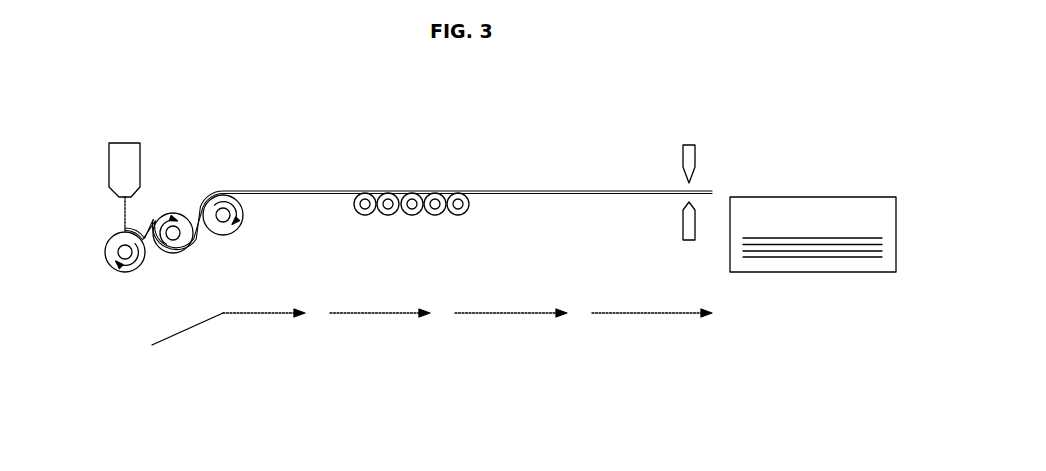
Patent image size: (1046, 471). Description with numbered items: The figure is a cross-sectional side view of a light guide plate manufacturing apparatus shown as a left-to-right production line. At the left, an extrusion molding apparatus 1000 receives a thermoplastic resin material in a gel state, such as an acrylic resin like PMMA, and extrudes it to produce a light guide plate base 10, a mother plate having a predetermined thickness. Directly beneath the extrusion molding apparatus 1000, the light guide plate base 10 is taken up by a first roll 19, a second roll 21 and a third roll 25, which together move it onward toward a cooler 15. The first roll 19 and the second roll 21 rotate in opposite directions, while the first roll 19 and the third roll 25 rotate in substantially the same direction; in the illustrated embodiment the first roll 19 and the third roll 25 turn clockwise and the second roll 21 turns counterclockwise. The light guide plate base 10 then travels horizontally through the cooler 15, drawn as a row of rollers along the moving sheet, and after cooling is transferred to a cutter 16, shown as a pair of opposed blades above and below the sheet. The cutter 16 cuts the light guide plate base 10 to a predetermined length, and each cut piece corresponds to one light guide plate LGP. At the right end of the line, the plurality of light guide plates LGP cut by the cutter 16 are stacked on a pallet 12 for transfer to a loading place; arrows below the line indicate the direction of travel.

The extrusion molding apparatus 1000 is at (125, 143).
The light guide plate base 10 is at (123, 210).
The first roll 19 is at (105, 252).
The second roll 21 is at (156, 208).
The third roll 25 is at (216, 229).
The cooler 15 is at (409, 230).
The cutter 16 is at (712, 146).
The pallet 12 is at (812, 196).
The light guide plate LGP is at (845, 238).